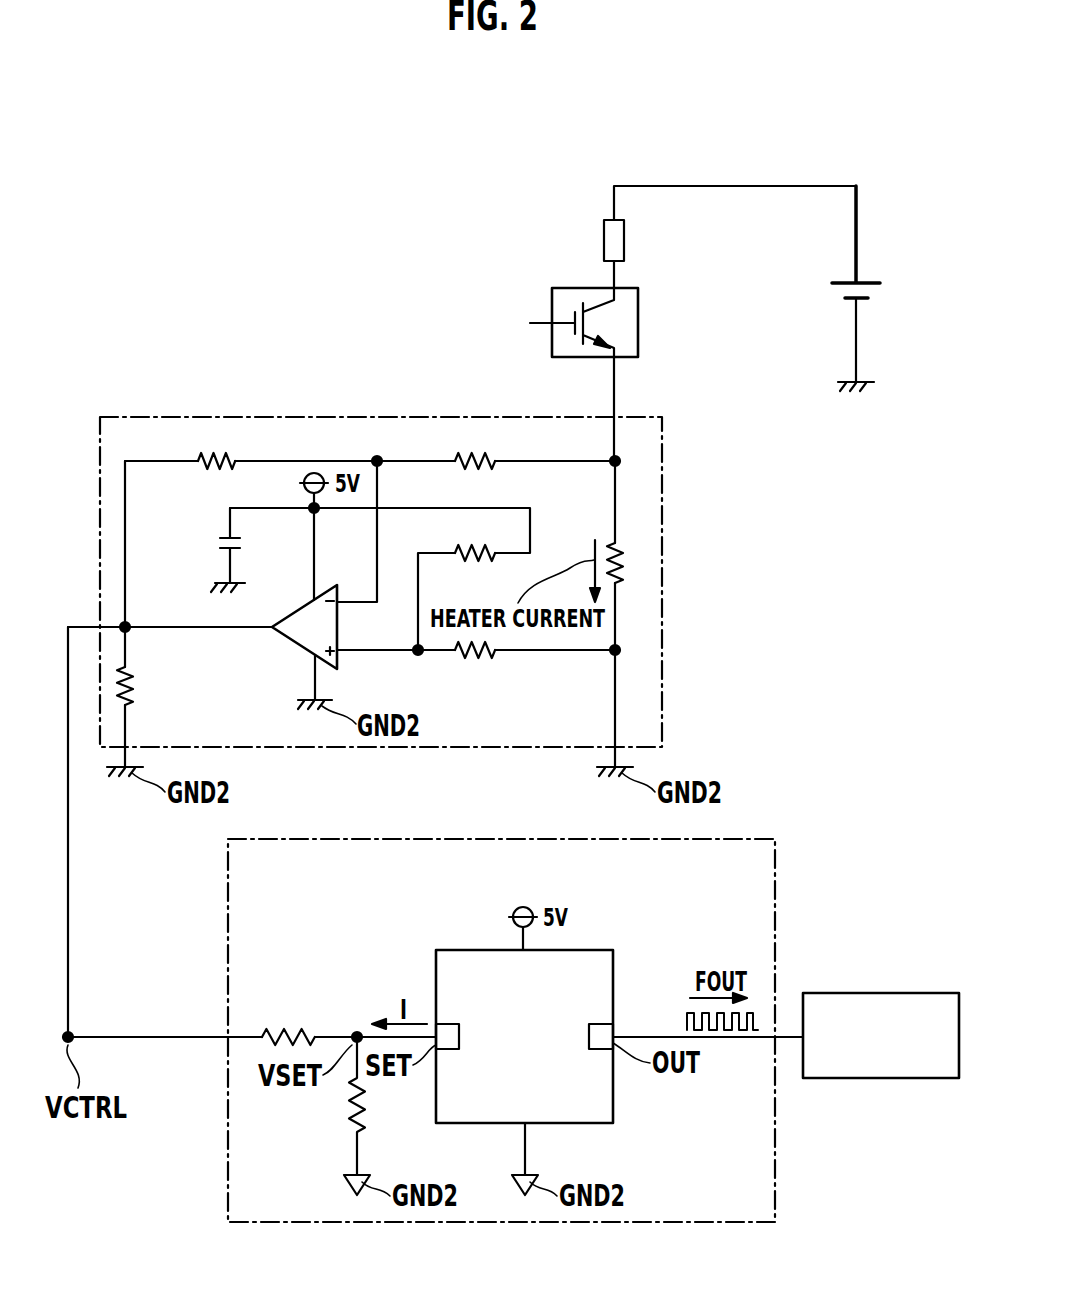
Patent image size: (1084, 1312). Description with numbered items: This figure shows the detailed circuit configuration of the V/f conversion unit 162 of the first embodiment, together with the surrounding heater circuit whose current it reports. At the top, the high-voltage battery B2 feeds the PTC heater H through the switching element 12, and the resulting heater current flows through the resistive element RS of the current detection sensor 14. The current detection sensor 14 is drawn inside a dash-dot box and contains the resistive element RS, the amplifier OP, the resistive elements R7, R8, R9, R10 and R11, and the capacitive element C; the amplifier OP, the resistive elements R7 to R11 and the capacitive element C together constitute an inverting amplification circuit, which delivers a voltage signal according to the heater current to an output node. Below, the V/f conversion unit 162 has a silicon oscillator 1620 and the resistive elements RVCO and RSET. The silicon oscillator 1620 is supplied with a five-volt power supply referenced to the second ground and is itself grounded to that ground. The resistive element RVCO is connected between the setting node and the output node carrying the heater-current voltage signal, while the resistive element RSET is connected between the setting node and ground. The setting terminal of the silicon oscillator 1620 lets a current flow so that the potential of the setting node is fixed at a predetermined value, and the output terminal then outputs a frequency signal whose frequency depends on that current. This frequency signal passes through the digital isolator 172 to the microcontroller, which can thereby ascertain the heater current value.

The PTC heater H is at (604, 236).
The switching element 12 is at (552, 342).
The high-voltage battery B2 is at (840, 283).
The current detection sensor 14 is at (662, 461).
The resistive element R10 is at (216, 445).
The resistive element R7 is at (475, 445).
The resistive element R8 is at (475, 570).
The resistive element R9 is at (475, 664).
The resistive element R11 is at (144, 686).
The resistive element RS is at (630, 563).
The capacitive element C is at (225, 550).
The amplifier OP is at (293, 643).
The V/f conversion unit 162 is at (703, 839).
The silicon oscillator 1620 is at (485, 950).
The resistive element RVCO is at (286, 1028).
The resistive element RSET is at (352, 1125).
The digital isolator 172 is at (880, 993).